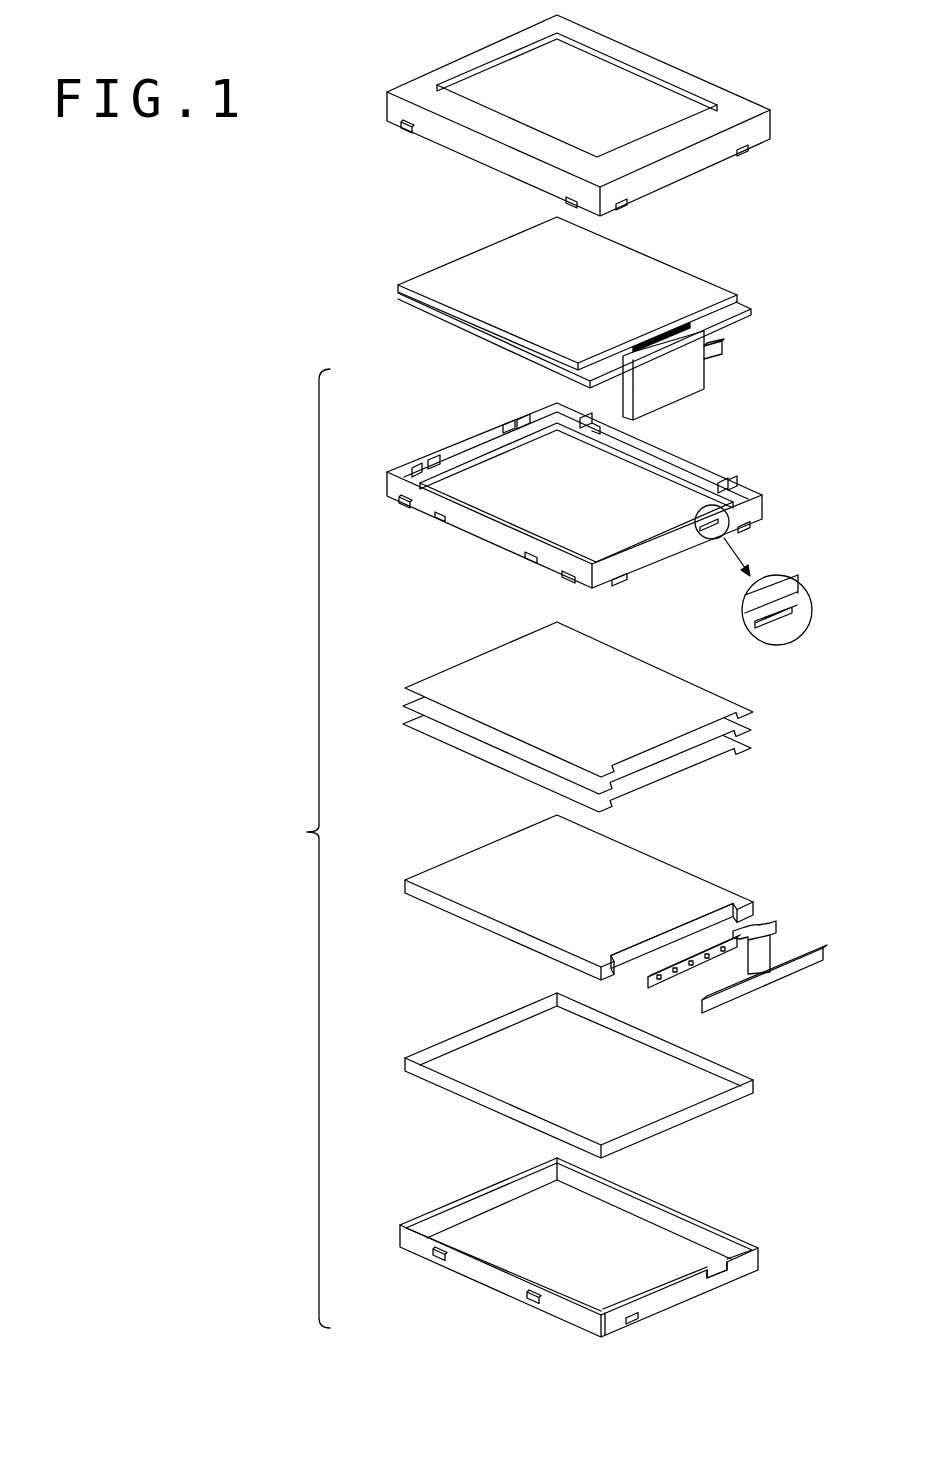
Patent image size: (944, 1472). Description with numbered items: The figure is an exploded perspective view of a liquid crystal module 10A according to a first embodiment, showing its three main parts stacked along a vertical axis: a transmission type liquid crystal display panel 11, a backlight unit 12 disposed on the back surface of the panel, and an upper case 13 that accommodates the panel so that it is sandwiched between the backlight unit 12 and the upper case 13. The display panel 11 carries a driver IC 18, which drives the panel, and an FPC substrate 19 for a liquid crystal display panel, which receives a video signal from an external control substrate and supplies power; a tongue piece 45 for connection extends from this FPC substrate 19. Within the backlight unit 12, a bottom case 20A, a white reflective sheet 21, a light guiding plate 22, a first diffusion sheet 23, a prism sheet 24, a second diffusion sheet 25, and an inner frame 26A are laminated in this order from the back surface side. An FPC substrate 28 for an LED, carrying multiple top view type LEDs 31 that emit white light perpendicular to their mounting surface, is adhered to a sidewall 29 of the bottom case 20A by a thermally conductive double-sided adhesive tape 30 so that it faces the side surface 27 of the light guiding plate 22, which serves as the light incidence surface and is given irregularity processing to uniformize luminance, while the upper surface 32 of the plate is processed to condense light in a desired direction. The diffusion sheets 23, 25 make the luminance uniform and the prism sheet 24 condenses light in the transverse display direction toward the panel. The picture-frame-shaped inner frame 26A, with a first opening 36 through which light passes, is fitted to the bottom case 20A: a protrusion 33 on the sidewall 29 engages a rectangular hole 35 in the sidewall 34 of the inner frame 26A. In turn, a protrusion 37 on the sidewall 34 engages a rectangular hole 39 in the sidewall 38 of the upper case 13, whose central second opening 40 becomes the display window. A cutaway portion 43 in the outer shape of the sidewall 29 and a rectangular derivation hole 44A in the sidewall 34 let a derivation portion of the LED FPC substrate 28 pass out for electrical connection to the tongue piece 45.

The liquid crystal module 10A is at (560, 115).
The transmission type liquid crystal display panel 11 is at (574, 301).
The backlight unit 12 is at (298, 848).
The upper case 13 is at (541, 99).
The driver IC 18 is at (663, 340).
The FPC substrate for a liquid crystal display panel 19 is at (680, 388).
The bottom case 20A is at (590, 1252).
The reflective sheet 21 is at (541, 1083).
The light guiding plate 22 is at (585, 897).
The first diffusion sheet 23 is at (655, 772).
The prism sheet 24 is at (677, 745).
The second diffusion sheet 25 is at (688, 715).
The inner frame 26A is at (604, 548).
The side surface of the light guiding plate 27 is at (700, 927).
The FPC substrate for an LED 28 is at (733, 989).
The sidewall of the bottom case 29 is at (506, 1291).
The double-sided adhesive tape 30 is at (748, 985).
The top view type LEDs 31 is at (663, 988).
The upper surface of the light guiding plate 32 is at (548, 920).
The protrusion of the sidewall of the bottom case 33 is at (437, 1262).
The sidewall of the inner frame 34 is at (483, 540).
The rectangular hole of the sidewall of the inner frame 35 is at (434, 521).
The first opening 36 is at (608, 512).
The protrusion of the sidewall of the inner frame 37 is at (401, 508).
The sidewall of the upper case 38 is at (571, 115).
The rectangular hole of the sidewall of the upper case 39 is at (405, 131).
The second opening 40 is at (645, 120).
The cutaway portion 43 is at (722, 1278).
The derivation hole 44A is at (778, 618).
The tongue piece for connection 45 is at (716, 354).